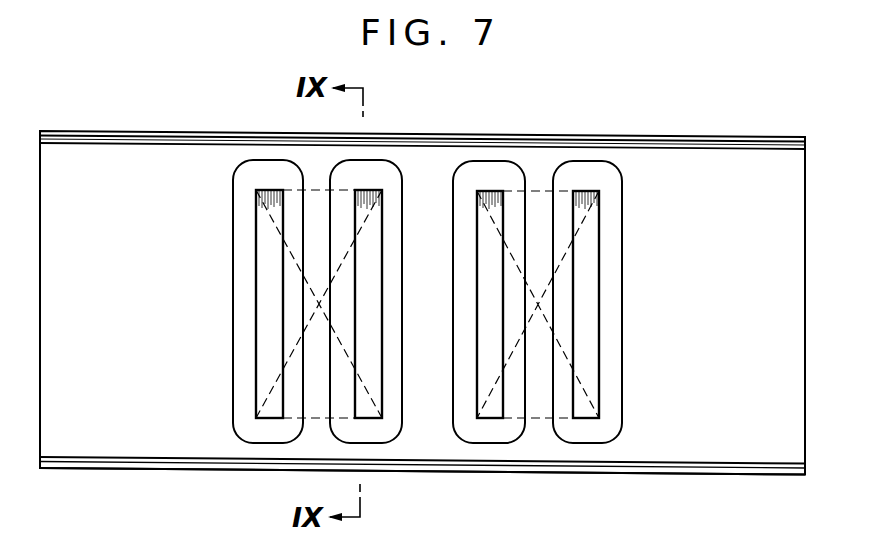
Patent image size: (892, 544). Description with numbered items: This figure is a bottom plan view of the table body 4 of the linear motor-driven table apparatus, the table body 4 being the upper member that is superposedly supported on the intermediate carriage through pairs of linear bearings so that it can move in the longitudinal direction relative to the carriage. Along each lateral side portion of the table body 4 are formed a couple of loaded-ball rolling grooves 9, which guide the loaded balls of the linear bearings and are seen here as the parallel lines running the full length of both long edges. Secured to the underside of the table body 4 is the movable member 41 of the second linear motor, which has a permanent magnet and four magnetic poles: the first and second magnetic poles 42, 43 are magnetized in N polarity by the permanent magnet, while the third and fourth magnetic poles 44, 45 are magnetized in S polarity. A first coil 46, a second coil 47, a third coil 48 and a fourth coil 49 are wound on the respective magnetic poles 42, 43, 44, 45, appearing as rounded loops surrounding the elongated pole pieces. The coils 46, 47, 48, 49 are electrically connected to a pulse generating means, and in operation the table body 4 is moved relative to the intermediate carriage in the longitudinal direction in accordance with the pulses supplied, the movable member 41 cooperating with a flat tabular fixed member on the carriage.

The table body 4 is at (652, 137).
The loaded-ball rolling grooves 9 is at (740, 143).
The movable member 41 is at (444, 172).
The first magnetic pole 42 is at (256, 244).
The second magnetic pole 43 is at (382, 218).
The third magnetic pole 44 is at (477, 390).
The fourth magnetic pole 45 is at (599, 360).
The first coil 46 is at (233, 339).
The second coil 47 is at (402, 341).
The third coil 48 is at (453, 260).
The fourth coil 49 is at (622, 261).